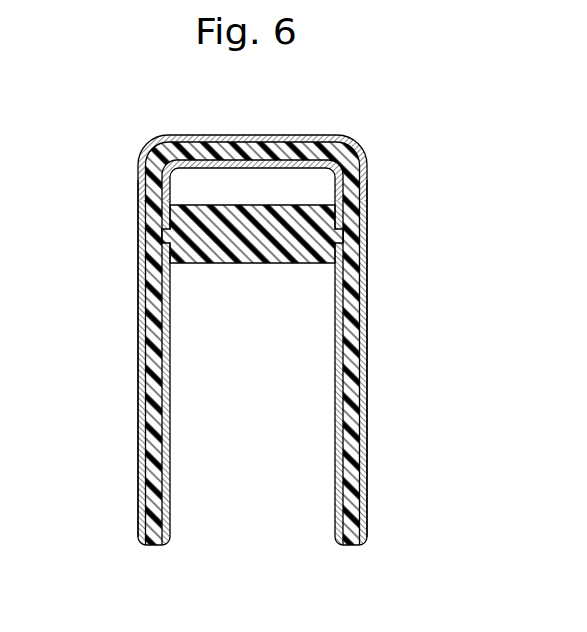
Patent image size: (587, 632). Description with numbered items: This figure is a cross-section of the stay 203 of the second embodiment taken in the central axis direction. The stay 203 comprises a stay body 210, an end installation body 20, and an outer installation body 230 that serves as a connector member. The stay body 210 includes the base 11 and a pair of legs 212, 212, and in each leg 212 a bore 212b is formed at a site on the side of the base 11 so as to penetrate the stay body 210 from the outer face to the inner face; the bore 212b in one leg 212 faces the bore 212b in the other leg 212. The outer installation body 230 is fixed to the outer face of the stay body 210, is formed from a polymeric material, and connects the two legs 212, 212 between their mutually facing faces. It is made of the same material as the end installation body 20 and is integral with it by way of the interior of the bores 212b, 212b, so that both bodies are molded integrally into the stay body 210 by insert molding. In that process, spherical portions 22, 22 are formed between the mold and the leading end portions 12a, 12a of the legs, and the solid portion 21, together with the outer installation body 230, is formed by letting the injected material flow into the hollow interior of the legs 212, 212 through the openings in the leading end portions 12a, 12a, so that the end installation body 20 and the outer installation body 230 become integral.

The stay 203 is at (432, 158).
The stay body 210 is at (367, 355).
The leg 212 is at (138, 320).
The bore 212b is at (158, 233).
The outer installation body 230 is at (218, 208).
The base 11 is at (256, 135).
The solid portion 21 is at (352, 435).
The end installation body 20 is at (352, 470).
The leading end portion 12a is at (142, 546).
The spherical portion 22 is at (155, 548).